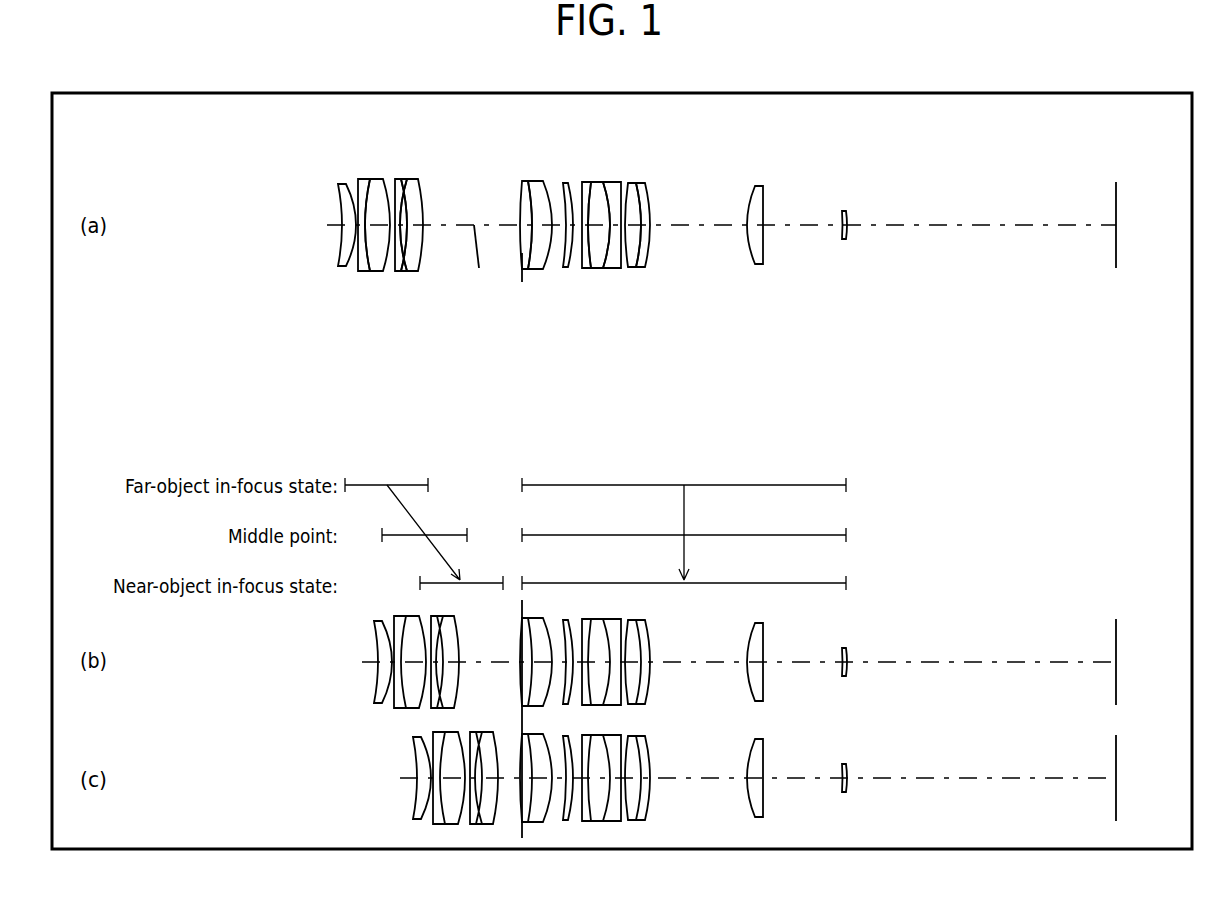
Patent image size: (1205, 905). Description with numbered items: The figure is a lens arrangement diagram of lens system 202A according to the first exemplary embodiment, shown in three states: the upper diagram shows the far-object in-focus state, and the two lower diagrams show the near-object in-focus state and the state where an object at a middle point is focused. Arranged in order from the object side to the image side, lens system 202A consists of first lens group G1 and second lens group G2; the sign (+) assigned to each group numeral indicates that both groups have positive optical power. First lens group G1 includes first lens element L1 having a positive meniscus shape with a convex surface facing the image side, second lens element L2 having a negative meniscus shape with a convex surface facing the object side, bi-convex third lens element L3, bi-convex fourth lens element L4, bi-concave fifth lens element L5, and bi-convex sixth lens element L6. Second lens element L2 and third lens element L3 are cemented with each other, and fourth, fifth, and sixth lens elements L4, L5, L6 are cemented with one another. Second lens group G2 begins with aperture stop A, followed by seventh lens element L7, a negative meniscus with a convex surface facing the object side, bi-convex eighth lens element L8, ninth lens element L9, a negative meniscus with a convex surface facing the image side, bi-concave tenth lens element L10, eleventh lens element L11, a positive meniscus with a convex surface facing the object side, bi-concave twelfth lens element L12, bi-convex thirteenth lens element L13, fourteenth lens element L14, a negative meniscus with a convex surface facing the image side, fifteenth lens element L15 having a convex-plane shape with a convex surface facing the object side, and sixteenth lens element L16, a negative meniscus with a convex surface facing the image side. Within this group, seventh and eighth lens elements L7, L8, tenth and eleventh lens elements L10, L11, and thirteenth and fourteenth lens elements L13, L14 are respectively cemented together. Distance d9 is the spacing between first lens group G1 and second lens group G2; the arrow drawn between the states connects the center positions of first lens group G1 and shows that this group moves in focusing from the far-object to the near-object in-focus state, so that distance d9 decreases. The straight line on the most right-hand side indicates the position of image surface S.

The lens system 202A is at (622, 471).
The first lens element L1 is at (340, 201).
The second lens element L2 is at (363, 191).
The third lens element L3 is at (379, 204).
The fourth lens element L4 is at (406, 191).
The fifth lens element L5 is at (419, 204).
The sixth lens element L6 is at (435, 191).
The seventh lens element L7 is at (507, 203).
The eighth lens element L8 is at (540, 203).
The ninth lens element L9 is at (573, 189).
The tenth lens element L10 is at (595, 202).
The eleventh lens element L11 is at (617, 189).
The twelfth lens element L12 is at (635, 202).
The thirteenth lens element L13 is at (672, 189).
The fourteenth lens element L14 is at (679, 223).
The fifteenth lens element L15 is at (771, 187).
The sixteenth lens element L16 is at (861, 175).
The aperture stop A is at (515, 196).
The image surface S is at (1145, 225).
The distance d9 is at (477, 263).
The first lens group G1 is at (424, 513).
The second lens group G2 is at (684, 513).